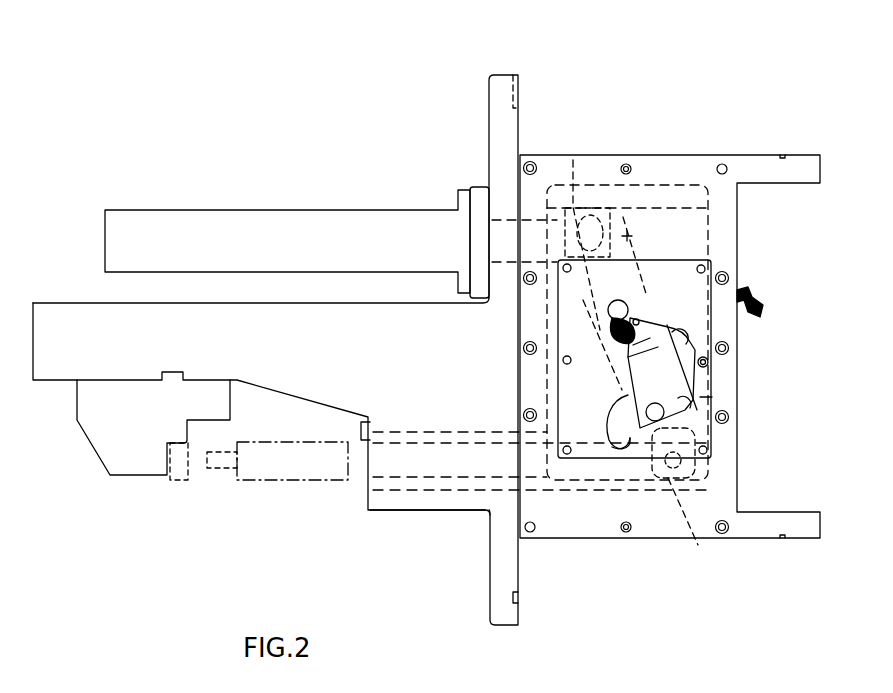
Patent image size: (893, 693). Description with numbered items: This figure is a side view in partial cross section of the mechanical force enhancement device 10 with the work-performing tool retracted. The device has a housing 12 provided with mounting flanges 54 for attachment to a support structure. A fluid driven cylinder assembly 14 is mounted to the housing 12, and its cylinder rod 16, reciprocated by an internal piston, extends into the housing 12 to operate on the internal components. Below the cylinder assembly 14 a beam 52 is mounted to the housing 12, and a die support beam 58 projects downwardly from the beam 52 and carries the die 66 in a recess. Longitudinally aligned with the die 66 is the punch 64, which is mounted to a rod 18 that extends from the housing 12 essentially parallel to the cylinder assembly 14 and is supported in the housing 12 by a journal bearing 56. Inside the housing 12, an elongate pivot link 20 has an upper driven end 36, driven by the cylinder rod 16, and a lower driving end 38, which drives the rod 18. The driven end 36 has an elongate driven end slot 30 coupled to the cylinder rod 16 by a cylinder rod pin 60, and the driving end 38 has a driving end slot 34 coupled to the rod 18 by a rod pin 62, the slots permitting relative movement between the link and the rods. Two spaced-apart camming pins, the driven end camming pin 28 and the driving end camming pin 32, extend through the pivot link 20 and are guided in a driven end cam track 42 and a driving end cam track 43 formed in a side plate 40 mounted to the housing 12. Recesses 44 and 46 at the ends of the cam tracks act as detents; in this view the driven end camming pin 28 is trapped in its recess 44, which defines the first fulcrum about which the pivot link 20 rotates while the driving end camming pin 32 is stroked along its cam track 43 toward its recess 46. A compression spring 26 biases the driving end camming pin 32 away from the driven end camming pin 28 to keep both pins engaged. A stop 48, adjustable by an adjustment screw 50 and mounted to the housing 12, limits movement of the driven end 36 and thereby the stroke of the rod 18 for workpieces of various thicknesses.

The mechanical force enhancement device 10 is at (218, 175).
The housing 12 is at (737, 369).
The fluid driven cylinder assembly 14 is at (346, 225).
The cylinder rod 16 is at (533, 293).
The rod 18 is at (360, 470).
The pivot link 20 is at (595, 345).
The compression spring 26 is at (662, 373).
The driven end camming pin 28 is at (633, 317).
The driven end slot 30 is at (606, 212).
The driving end camming pin 32 is at (628, 400).
The driving end slot 34 is at (698, 525).
The driven end 36 is at (575, 160).
The driving end 38 is at (738, 488).
The side plate 40 is at (713, 435).
The driven end cam track 42 is at (714, 336).
The driving end cam track 43 is at (712, 396).
The recess 44 is at (619, 300).
The recess 46 is at (612, 447).
The stop 48 is at (727, 277).
The adjustment screw 50 is at (755, 297).
The beam 52 is at (96, 318).
The mounting flanges 54 is at (518, 83).
The journal bearing 56 is at (427, 490).
The die support beam 58 is at (118, 447).
The cylinder rod pin 60 is at (630, 239).
The rod pin 62 is at (737, 467).
The punch 64 is at (268, 482).
The die 66 is at (180, 482).